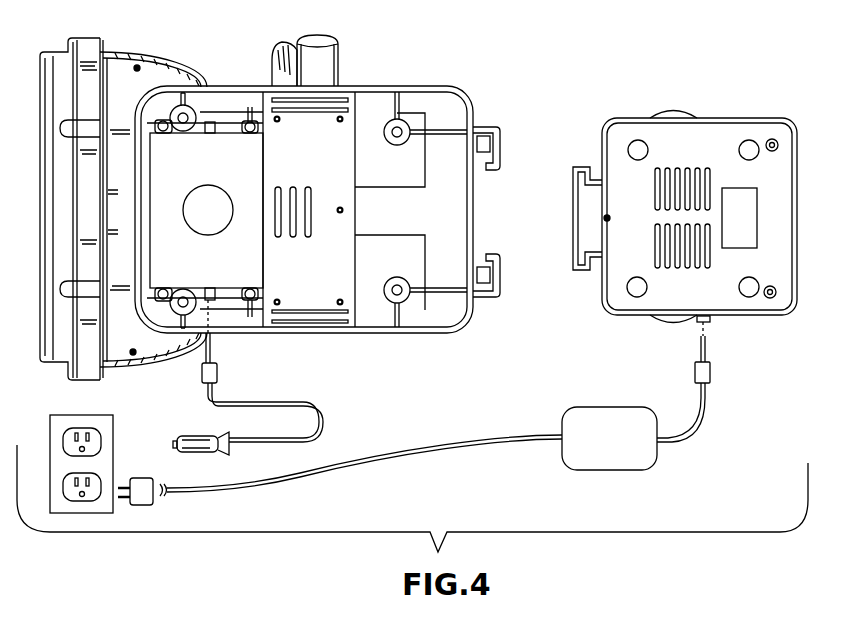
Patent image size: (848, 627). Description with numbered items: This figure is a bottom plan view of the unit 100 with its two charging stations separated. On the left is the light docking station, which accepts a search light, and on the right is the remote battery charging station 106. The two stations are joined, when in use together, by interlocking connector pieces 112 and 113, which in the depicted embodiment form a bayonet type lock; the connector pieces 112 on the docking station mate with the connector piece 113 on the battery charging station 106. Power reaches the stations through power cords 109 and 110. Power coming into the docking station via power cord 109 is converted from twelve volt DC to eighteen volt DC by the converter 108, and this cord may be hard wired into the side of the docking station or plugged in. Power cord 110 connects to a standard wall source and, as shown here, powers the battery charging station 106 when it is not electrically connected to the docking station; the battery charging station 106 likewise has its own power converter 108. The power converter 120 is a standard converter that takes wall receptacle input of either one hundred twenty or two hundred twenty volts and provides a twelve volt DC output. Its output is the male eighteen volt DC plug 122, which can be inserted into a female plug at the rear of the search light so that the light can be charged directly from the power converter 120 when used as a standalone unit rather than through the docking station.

The unit 100 is at (375, 68).
The battery charging station 106 is at (710, 106).
The converter 108 is at (228, 171).
The power cord 109 is at (258, 400).
The power cord 110 is at (427, 448).
The interlocking connector piece 112 is at (499, 128).
The interlocking connector piece 113 is at (573, 203).
The power converter 120 is at (630, 449).
The male 18vDC plug 122 is at (711, 373).